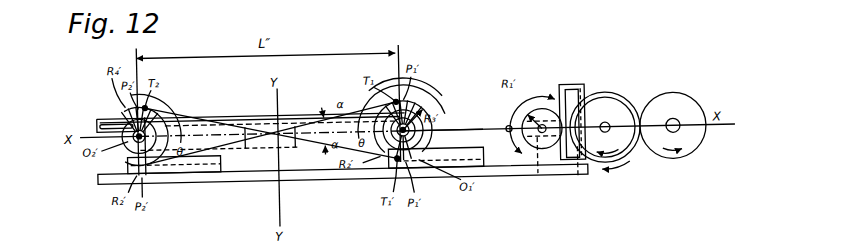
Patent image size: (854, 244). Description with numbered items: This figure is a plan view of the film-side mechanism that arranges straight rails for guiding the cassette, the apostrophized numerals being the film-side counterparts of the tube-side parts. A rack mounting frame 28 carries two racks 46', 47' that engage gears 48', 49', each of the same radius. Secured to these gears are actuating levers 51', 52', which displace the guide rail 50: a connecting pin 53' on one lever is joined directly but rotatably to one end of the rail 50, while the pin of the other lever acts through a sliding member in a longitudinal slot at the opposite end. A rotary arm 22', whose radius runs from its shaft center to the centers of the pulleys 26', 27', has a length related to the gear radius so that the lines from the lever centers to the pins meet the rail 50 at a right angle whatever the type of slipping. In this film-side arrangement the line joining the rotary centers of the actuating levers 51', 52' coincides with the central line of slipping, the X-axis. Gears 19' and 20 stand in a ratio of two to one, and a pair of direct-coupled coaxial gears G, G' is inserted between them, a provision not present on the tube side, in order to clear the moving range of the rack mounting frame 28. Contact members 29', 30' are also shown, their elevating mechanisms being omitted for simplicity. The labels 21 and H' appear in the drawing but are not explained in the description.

The gear 19' is at (672, 106).
The gear 20 is at (540, 112).
The shaft 21 is at (677, 135).
The rotary arm 22' is at (552, 159).
The pulley 26' is at (500, 117).
The pulley 27' is at (604, 116).
The rack mounting frame 28 is at (503, 178).
The contact member 29' is at (590, 174).
The contact member 30' is at (572, 99).
The rack 46' is at (436, 176).
The rack 47' is at (178, 182).
The gear 48' is at (443, 139).
The gear 49' is at (115, 147).
The tube guide rail 50 is at (297, 111).
The actuating lever 51' is at (410, 119).
The actuating lever 52' is at (271, 127).
The connecting pin 53' is at (294, 125).
The gear G is at (605, 116).
The gear G' is at (604, 104).
The hub H' is at (133, 128).